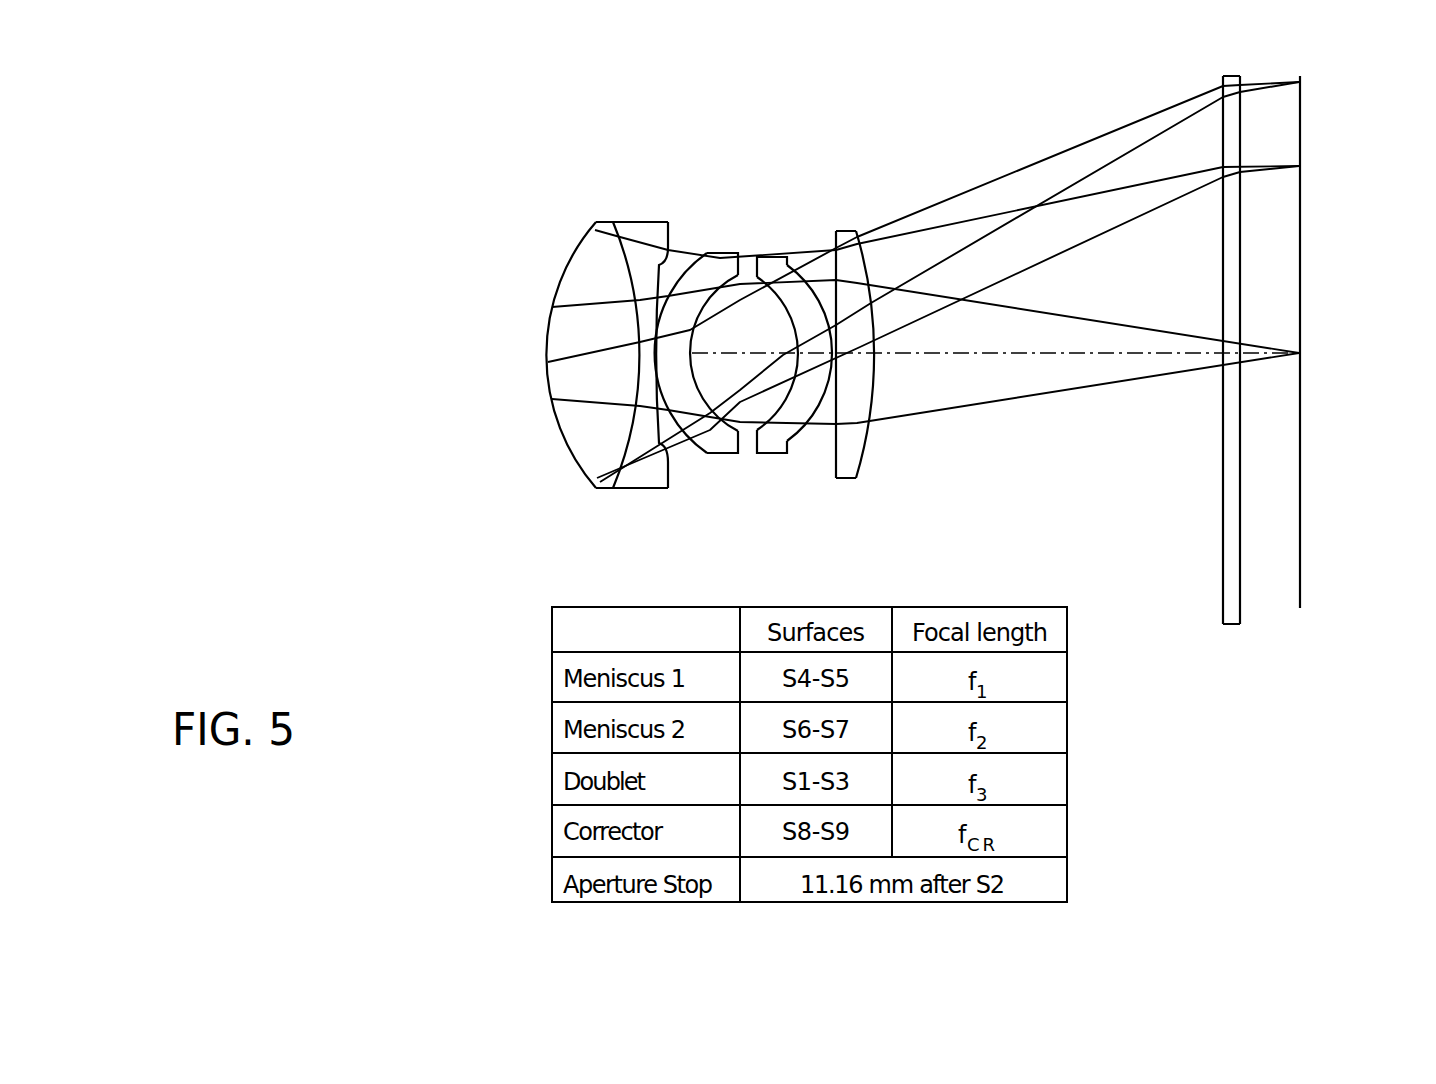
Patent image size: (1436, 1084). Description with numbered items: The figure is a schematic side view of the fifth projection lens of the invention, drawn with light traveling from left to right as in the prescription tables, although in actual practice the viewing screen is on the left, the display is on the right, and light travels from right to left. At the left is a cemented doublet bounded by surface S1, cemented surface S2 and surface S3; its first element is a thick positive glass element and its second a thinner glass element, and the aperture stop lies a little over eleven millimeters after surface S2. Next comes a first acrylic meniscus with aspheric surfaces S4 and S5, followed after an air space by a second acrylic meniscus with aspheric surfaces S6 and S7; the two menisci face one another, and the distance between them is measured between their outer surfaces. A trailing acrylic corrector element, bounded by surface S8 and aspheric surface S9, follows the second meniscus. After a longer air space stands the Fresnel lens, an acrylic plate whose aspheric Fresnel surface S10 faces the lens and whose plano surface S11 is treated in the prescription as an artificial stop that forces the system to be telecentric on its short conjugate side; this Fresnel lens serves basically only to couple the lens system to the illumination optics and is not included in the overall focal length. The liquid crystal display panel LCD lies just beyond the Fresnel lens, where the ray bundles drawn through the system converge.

The first surface of doublet S1 is at (557, 283).
The cemented surface of doublet S2 is at (622, 262).
The rear surface of doublet S3 is at (644, 222).
The first aspheric surface of first meniscus S4 is at (695, 262).
The second aspheric surface of first meniscus S5 is at (733, 262).
The first aspheric surface of second meniscus S6 is at (763, 440).
The second aspheric surface of second meniscus S7 is at (796, 440).
The first surface of corrector S8 is at (836, 448).
The aspheric surface of corrector S9 is at (862, 448).
The aspheric Fresnel surface S10 is at (1224, 515).
The plano surface of Fresnel lens S11 is at (1242, 597).
The LCD panel LCD is at (1302, 576).